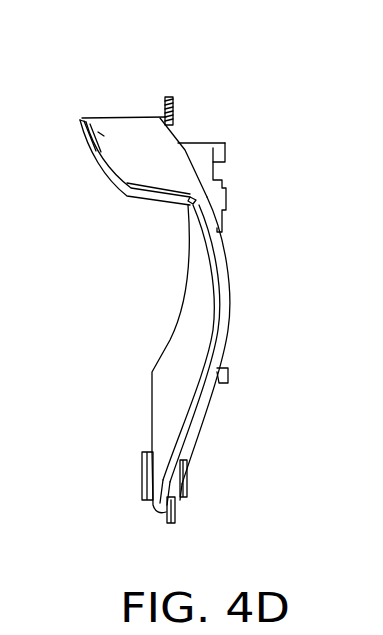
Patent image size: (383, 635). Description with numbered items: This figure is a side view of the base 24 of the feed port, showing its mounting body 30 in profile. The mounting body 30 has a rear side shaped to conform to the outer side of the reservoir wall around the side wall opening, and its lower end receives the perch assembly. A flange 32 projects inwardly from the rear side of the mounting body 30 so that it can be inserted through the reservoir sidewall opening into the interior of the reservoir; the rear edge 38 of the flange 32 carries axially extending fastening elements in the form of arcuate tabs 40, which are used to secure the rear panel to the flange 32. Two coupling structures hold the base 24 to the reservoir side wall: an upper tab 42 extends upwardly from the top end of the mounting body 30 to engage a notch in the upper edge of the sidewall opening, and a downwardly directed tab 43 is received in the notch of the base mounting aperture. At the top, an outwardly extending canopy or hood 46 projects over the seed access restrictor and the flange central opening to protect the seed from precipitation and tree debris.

The base 24 is at (236, 132).
The mounting body 30 is at (175, 418).
The flange 32 is at (188, 141).
The rear edge 38 is at (226, 173).
The arcuate tabs 40 is at (228, 152).
The upper tab 42 is at (171, 96).
The downwardly directed tab 43 is at (178, 516).
The hood 46 is at (77, 130).